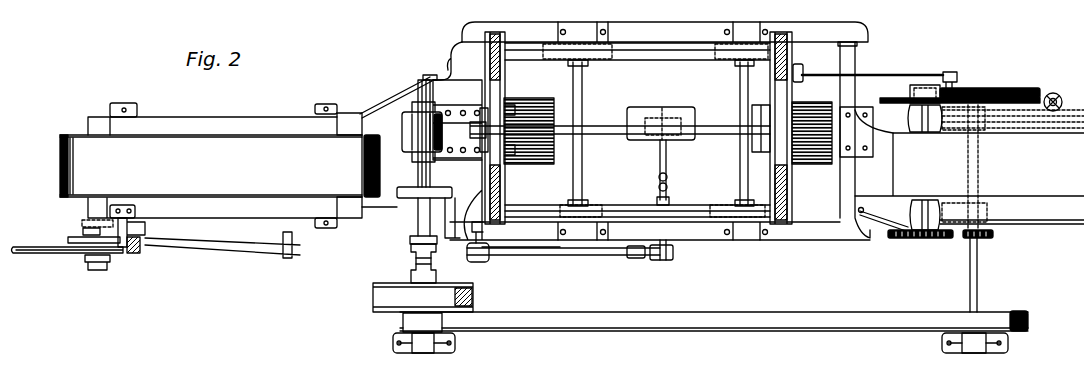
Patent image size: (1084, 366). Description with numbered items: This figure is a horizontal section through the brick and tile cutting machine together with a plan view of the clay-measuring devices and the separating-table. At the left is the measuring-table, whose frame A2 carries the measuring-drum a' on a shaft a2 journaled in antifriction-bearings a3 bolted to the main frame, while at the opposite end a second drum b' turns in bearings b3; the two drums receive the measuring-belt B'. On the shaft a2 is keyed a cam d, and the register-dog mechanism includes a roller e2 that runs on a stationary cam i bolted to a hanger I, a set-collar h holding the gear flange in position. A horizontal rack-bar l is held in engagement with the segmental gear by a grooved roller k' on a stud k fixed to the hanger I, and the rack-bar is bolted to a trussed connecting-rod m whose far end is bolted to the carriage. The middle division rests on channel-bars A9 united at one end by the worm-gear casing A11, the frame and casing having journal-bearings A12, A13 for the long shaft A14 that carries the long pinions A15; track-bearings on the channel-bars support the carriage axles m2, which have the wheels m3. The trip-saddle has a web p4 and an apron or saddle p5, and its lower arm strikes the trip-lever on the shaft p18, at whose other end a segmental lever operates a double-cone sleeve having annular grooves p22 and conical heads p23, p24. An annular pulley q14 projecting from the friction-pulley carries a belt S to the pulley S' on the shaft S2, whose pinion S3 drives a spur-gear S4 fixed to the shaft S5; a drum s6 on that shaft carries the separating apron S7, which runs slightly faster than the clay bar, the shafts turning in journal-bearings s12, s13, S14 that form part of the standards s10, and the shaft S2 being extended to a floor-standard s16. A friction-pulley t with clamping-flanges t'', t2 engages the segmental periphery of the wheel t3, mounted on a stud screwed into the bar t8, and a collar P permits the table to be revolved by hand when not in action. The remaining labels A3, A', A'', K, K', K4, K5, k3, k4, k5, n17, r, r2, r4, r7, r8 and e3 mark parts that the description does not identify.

The arm A3 is at (198, 117).
The measuring-belt B' is at (52, 166).
The measuring-drum a' is at (76, 125).
The antifriction-bearings a3 is at (110, 110).
The frame of the measuring-table A2 is at (238, 218).
The bearings b3 is at (352, 113).
The second drum b' is at (376, 154).
The rod r is at (379, 200).
The worm-gear casing A11 is at (416, 112).
The journal-bearing A13 is at (810, 178).
The housing lug A'' is at (447, 58).
The channel-bars A9 is at (690, 22).
The housing top K is at (599, 12).
The journal-bearing A12 is at (856, 132).
The frame A' is at (800, 186).
The clutch plate k5 is at (505, 73).
The grooved roller k' is at (329, 174).
The long pinions A15 is at (529, 139).
The clutch plate K' is at (637, 148).
The drum k4 is at (775, 110).
The collar k3 is at (770, 160).
The collar K5 is at (740, 180).
The frame bar K4 is at (659, 64).
The wheels m3 is at (735, 203).
The axles of the carriage m2 is at (578, 104).
The trussed connecting-rod m is at (457, 196).
The apron or saddle p5 is at (680, 108).
The web of the trip-saddle p4 is at (668, 158).
The long longitudinally-extending shaft A14 is at (606, 134).
The shaft p18 is at (531, 256).
The tee n17 is at (668, 261).
The rod r7 is at (472, 222).
The foot r2 is at (478, 263).
The block r8 is at (424, 193).
The rod r4 is at (446, 250).
The conical head p24 is at (410, 240).
The annular grooves p22 is at (411, 263).
The collar P is at (422, 286).
The conical head p23 is at (412, 275).
The annular ring or pulley q14 is at (403, 327).
The band or belt S is at (714, 320).
The pulley S' is at (1025, 310).
The floor-standard s16 is at (455, 346).
The clamping-flange t'' is at (875, 71).
The clamping-flange t2 is at (943, 72).
The bar t8 is at (892, 98).
The friction-pulley t is at (992, 99).
The wheel t3 is at (1052, 92).
The journal-bearing s13 is at (910, 117).
The separating apron S7 is at (886, 150).
The standards s10 is at (885, 184).
The drum or pulley s6 is at (885, 197).
The journal-bearing s12 is at (885, 217).
The journal-bearing S14 is at (987, 212).
The pinion S3 is at (990, 234).
The shaft S5 is at (934, 238).
The spur-gear S4 is at (900, 238).
The shaft S2 is at (980, 287).
The rack-bar l is at (36, 254).
The cam d is at (72, 244).
The roller e2 is at (82, 224).
The plate e3 is at (83, 232).
The stud k is at (140, 235).
The stationary cam i is at (122, 222).
The hanger I is at (148, 220).
The set-collar h is at (112, 265).
The shaft a2 is at (98, 270).